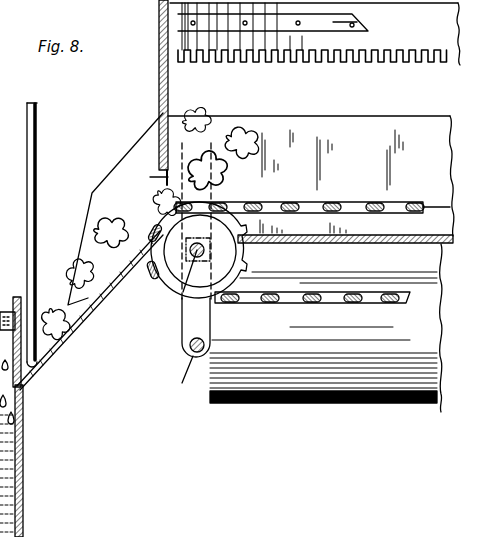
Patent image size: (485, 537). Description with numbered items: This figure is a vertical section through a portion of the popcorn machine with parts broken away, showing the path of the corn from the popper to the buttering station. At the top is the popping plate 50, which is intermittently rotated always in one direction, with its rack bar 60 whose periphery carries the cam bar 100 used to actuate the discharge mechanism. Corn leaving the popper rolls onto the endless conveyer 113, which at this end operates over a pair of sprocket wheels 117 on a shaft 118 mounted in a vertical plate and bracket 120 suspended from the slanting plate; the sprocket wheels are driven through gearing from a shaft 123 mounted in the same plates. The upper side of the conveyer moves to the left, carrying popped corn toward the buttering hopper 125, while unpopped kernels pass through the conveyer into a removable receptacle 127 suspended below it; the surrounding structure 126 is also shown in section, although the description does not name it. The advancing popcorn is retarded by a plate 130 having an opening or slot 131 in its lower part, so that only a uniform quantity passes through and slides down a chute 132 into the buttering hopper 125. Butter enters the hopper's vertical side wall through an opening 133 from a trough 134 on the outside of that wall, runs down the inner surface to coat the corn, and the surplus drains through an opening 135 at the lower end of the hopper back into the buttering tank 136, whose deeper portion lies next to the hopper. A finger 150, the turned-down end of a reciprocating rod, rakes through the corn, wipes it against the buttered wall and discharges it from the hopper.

The popping plate 50 is at (163, 12).
The rack bar 60 is at (207, 54).
The cam bar 100 is at (362, 23).
The endless conveyer 113 is at (275, 206).
The sprocket wheels 117 is at (247, 256).
The shaft 118 is at (294, 324).
The bracket 120 is at (190, 345).
The shaft 123 is at (186, 379).
The buttering hopper 125 is at (43, 366).
The cabinet 126 is at (311, 264).
The receptacle 127 is at (345, 244).
The plate 130 is at (160, 116).
The opening or slot 131 is at (148, 176).
The chute 132 is at (123, 272).
The opening 133 is at (20, 297).
The trough 134 is at (9, 383).
The opening 135 is at (25, 388).
The buttering tank 136 is at (24, 502).
The finger 150 is at (34, 274).